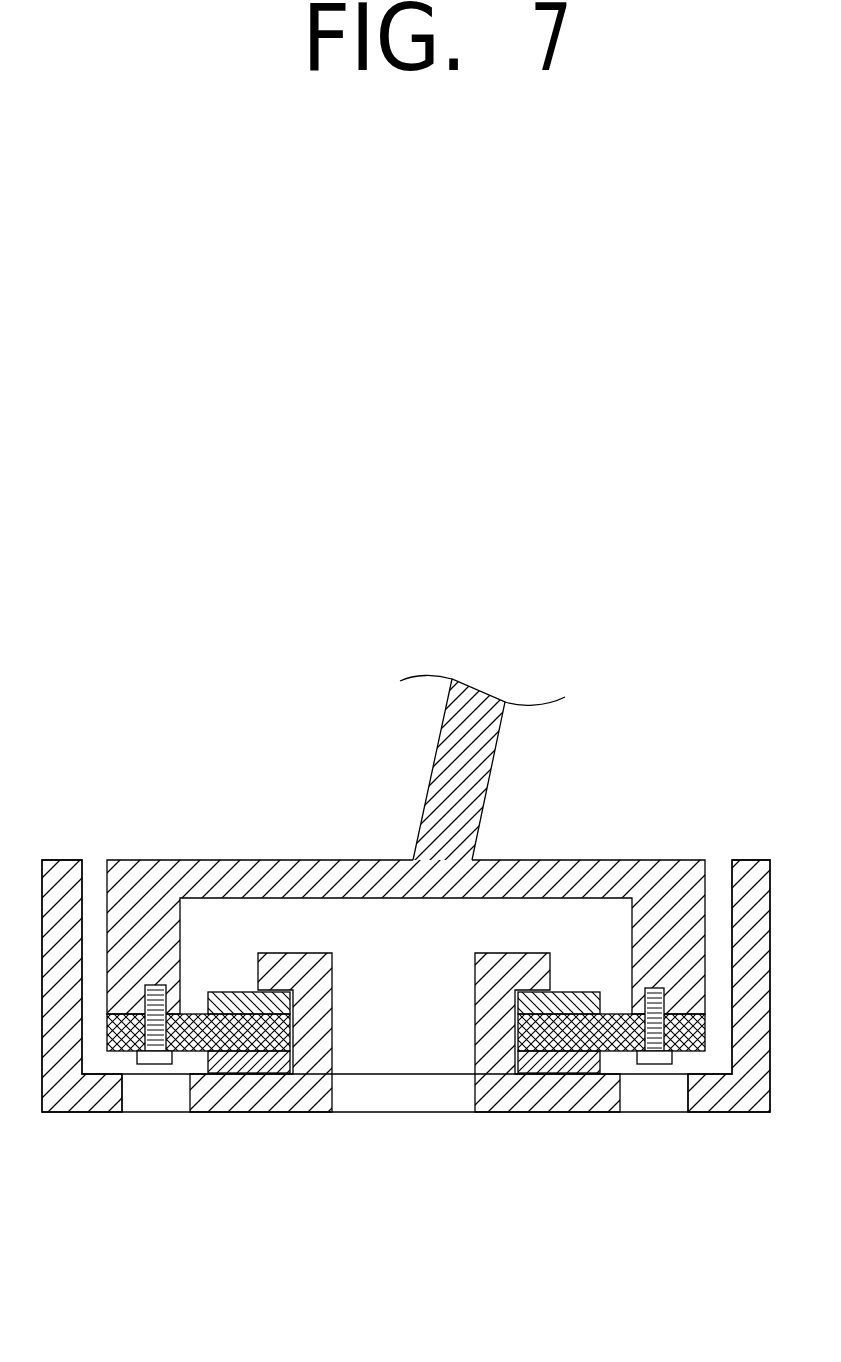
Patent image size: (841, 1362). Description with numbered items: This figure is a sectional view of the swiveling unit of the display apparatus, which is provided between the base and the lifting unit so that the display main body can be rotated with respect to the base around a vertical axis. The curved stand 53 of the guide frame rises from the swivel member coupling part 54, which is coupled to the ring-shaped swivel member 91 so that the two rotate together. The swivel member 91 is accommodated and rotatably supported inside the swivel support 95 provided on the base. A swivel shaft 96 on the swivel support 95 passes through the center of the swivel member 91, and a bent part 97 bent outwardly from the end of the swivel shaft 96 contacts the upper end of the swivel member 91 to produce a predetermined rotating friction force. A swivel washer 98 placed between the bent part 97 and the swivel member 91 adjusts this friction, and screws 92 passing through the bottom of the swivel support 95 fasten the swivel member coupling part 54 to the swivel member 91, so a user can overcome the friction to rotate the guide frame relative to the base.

The curved stand 53 is at (470, 702).
The swivel member coupling part 54 is at (612, 860).
The swivel support 95 is at (730, 945).
The swivel shaft 96 is at (475, 1052).
The bent part 97 is at (490, 963).
The swivel washer 98 is at (280, 1074).
The swivel member 91 is at (200, 1051).
The screw 92 is at (155, 1064).